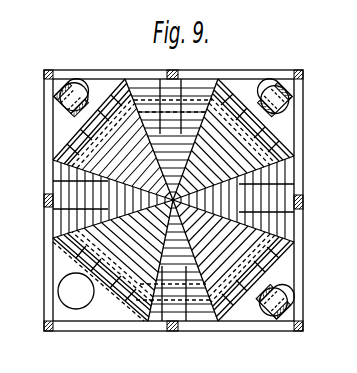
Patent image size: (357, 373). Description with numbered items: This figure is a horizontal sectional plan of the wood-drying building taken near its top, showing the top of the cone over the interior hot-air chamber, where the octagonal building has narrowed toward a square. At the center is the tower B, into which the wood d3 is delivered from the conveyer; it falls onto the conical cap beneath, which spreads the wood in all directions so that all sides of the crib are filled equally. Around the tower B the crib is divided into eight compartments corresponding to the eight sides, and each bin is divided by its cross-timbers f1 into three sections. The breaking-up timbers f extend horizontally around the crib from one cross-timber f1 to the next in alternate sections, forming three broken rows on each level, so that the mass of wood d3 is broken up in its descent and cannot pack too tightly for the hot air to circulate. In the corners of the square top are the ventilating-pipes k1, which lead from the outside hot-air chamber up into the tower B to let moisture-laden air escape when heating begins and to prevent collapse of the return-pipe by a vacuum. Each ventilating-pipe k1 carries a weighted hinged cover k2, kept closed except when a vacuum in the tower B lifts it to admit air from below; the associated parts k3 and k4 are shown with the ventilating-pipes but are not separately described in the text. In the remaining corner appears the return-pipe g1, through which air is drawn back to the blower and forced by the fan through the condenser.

The tower B is at (296, 207).
The breaking-up timbers f is at (140, 314).
The cross-timbers f1 is at (185, 314).
The wood d3 is at (173, 200).
The ventilating-pipes k1 is at (287, 292).
The weighted hinged covers k2 is at (260, 313).
The circular bearing opening k3 is at (254, 299).
The guide bar k4 is at (277, 305).
The return-pipe g1 is at (76, 291).